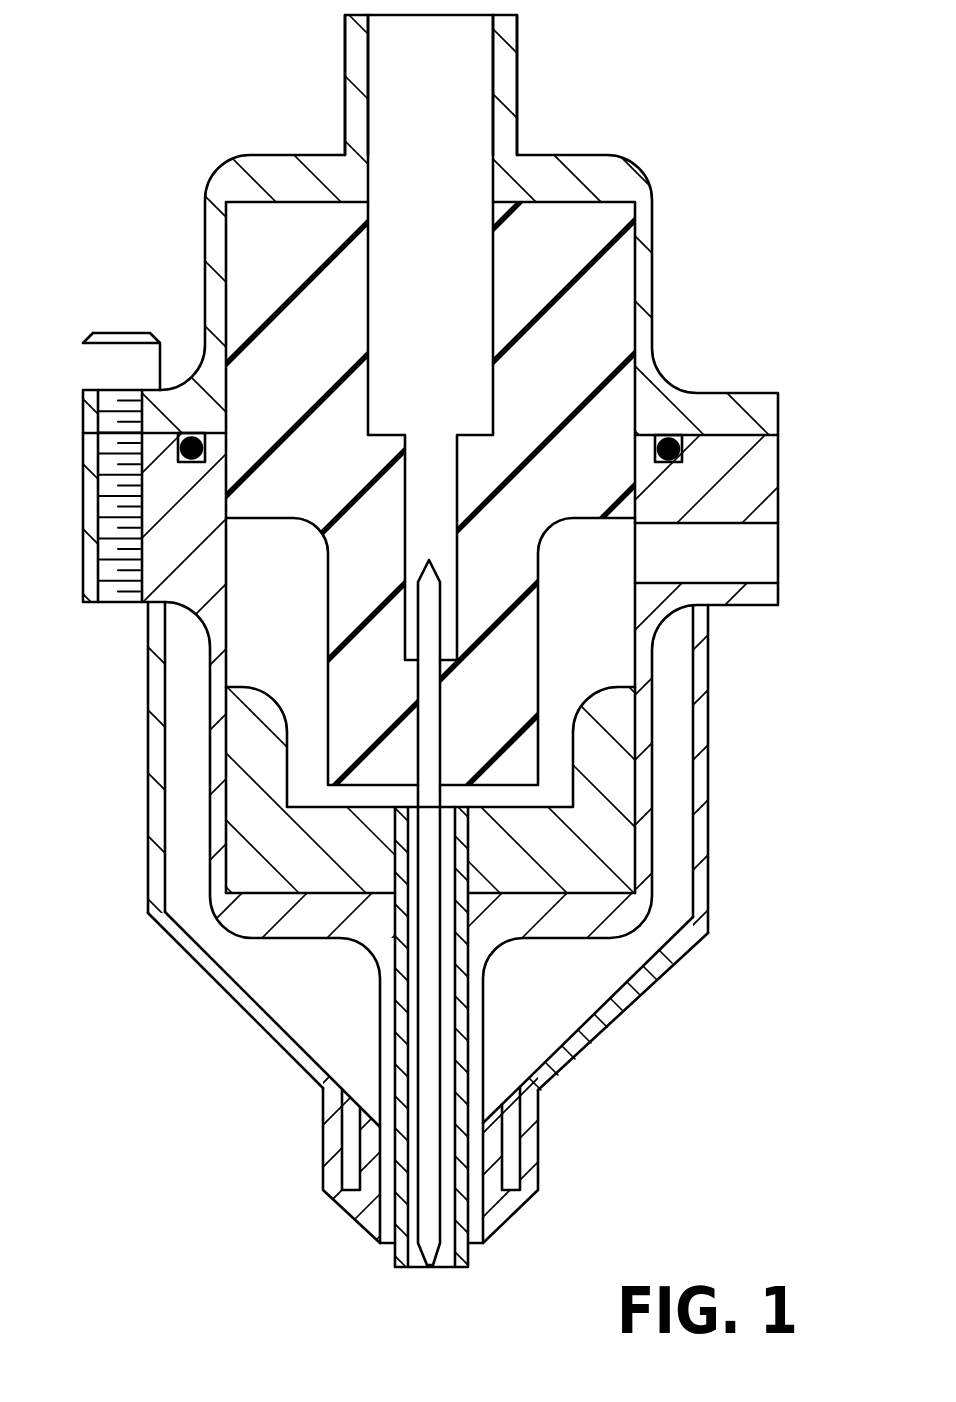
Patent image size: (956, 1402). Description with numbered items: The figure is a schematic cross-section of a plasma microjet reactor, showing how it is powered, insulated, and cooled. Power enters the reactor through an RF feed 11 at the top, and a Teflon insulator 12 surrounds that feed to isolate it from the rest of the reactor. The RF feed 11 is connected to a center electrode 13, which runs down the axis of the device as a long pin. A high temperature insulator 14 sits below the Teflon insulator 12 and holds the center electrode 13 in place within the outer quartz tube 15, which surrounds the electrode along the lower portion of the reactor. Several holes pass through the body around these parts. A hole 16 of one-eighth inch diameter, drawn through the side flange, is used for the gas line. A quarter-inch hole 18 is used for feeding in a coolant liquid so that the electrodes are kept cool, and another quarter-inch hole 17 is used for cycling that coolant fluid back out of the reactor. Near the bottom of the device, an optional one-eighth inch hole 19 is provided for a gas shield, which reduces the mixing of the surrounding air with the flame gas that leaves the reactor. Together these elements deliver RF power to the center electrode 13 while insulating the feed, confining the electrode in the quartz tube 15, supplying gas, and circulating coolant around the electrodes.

The RF feed 11 is at (450, 206).
The Teflon insulator 12 is at (592, 366).
The center electrode 13 is at (423, 1023).
The high temperature insulator 14 is at (277, 847).
The outer quartz tube 15 is at (400, 982).
The 0.125-inch hole 16 is at (760, 557).
The 0.25-inch hole 17 is at (697, 693).
The 0.25-inch hole 18 is at (610, 1015).
The 0.125-inch hole 19 is at (522, 1157).